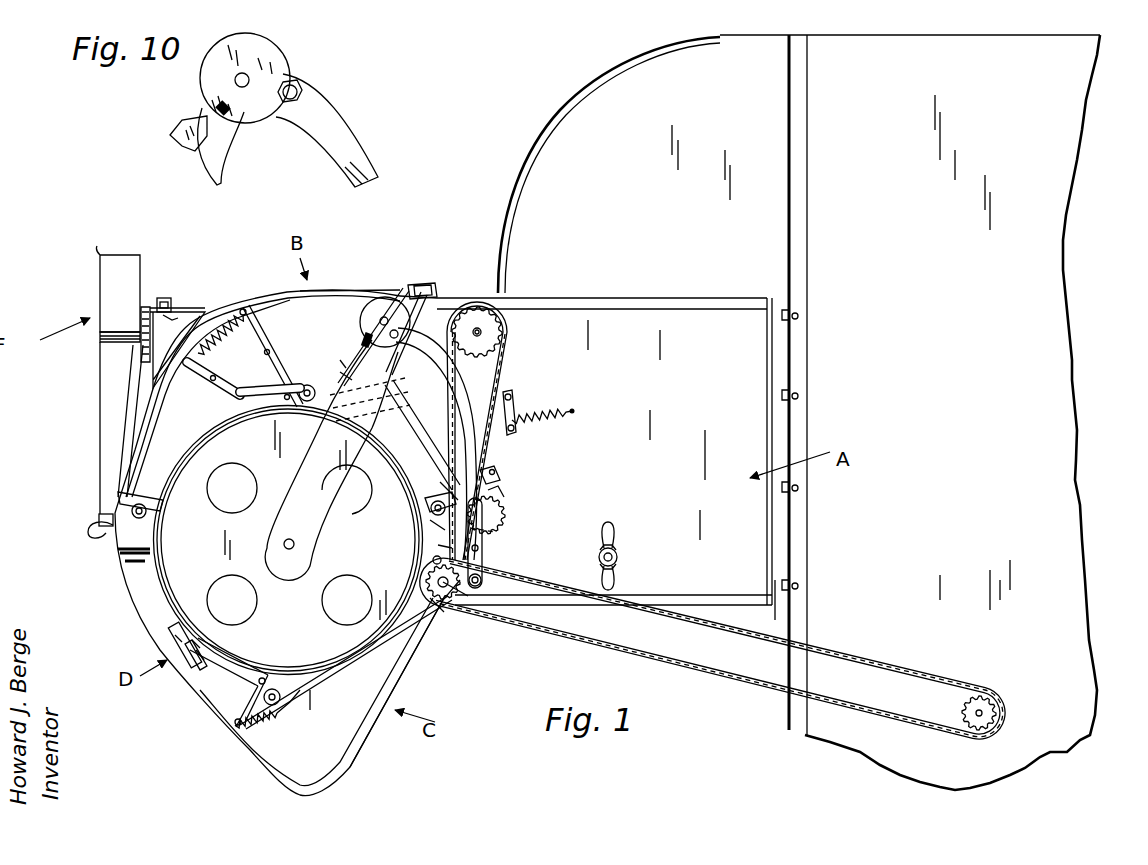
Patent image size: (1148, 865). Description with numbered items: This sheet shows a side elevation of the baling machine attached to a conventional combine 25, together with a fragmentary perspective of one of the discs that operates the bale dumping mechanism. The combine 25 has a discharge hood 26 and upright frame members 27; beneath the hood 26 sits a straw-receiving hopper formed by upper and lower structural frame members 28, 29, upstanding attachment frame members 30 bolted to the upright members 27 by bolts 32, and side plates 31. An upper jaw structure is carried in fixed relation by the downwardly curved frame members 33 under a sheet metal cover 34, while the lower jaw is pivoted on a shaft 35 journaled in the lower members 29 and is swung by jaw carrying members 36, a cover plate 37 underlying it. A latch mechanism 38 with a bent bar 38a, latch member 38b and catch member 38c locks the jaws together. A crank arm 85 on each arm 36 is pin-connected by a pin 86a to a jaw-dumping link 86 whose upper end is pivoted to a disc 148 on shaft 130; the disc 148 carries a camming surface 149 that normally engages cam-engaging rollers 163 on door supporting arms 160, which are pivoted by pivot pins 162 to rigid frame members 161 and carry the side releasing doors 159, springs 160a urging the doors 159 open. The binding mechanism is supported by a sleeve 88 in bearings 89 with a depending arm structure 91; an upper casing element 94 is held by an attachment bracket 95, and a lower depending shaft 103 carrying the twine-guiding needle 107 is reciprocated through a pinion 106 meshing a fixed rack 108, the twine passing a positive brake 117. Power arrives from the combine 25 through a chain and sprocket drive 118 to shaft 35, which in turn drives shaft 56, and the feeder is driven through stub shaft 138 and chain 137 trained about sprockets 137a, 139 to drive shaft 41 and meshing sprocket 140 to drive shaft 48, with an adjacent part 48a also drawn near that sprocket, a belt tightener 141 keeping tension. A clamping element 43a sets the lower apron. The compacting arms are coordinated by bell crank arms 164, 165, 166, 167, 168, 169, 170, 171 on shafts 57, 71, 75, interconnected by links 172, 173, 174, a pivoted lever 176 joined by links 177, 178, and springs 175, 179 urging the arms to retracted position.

In FIG. 1, the combine 25 is at (1028, 240).
In FIG. 1, the discharge hood 26 is at (600, 103).
In FIG. 1, the upright frame members 27 is at (792, 168).
In FIG. 1, the upper structural frame member 28 is at (588, 299).
In FIG. 1, the lower structural frame member 29 is at (645, 602).
In FIG. 1, the attachment frame members 30 is at (780, 445).
In FIG. 1, the side plates 31 is at (662, 318).
In FIG. 1, the bolts 32 is at (838, 541).
In FIG. 1, the downwardly curved frame members 33 is at (330, 292).
In FIG. 1, the sheet metal cover 34 is at (282, 296).
In FIG. 1, the shaft 35 is at (438, 576).
In FIG. 1, the jaw carrying members 36 is at (425, 655).
In FIG. 1, the cover plate 37 is at (350, 763).
In FIG. 1, the latch mechanism 38 is at (180, 665).
In FIG. 1, the bent bar 38a is at (203, 656).
In FIG. 1, the latch member 38b is at (177, 638).
In FIG. 1, the catch member 38c is at (198, 642).
In FIG. 1, the shaft 41 is at (496, 530).
In FIG. 1, the clamping element 43a is at (622, 556).
In FIG. 1, the shaft 48 is at (498, 497).
In FIG. 1, the ratchet plate 48a is at (495, 480).
In FIG. 1, the shaft 56 is at (427, 510).
In FIG. 1, the shaft 57 is at (150, 519).
In FIG. 1, the shaft 71 is at (309, 388).
In FIG. 1, the shaft 75 is at (281, 690).
In FIG. 1, the crank arm 85 is at (478, 600).
In FIG. 10, the jaw-dumping link 86 is at (343, 143).
In FIG. 1, the jaw-dumping link 86 is at (465, 400).
In FIG. 1, the pin 86a is at (488, 578).
In FIG. 1, the sleeve 88 is at (182, 302).
In FIG. 1, the bearings 89 is at (166, 298).
In FIG. 1, the depending arm structure 91 is at (112, 428).
In FIG. 1, the upper casing element 94 is at (112, 285).
In FIG. 1, the attachment bracket 95 is at (175, 320).
In FIG. 1, the lower depending shaft 103 is at (100, 520).
In FIG. 1, the pinion 106 is at (138, 362).
In FIG. 1, the twine-guiding needle 107 is at (92, 533).
In FIG. 1, the fixed rack 108 is at (128, 345).
In FIG. 1, the positive brake 117 is at (426, 284).
In FIG. 1, the chain and sprocket drive 118 is at (758, 703).
In FIG. 10, the shaft 130 is at (237, 79).
In FIG. 1, the shaft 130 is at (378, 321).
In FIG. 1, the chain 137 is at (505, 363).
In FIG. 1, the sprocket 137a is at (497, 335).
In FIG. 1, the stub shaft 138 is at (477, 332).
In FIG. 1, the sprocket 139 is at (488, 553).
In FIG. 1, the sprocket 140 is at (503, 515).
In FIG. 1, the belt tightener 141 is at (514, 402).
In FIG. 10, the discs 148 is at (270, 48).
In FIG. 1, the discs 148 is at (395, 300).
In FIG. 10, the camming surface 149 is at (207, 93).
In FIG. 1, the side releasing and dumping doors 159 is at (183, 578).
In FIG. 10, the door supporting arms 160 is at (214, 148).
In FIG. 1, the door supporting arms 160 is at (322, 460).
In FIG. 1, the springs 160a is at (393, 404).
In FIG. 1, the rigid frame members 161 is at (345, 352).
In FIG. 1, the pivot pins 162 is at (362, 379).
In FIG. 10, the cam-engaging rollers 163 is at (200, 133).
In FIG. 1, the cam-engaging rollers 163 is at (363, 338).
In FIG. 1, the bell crank arm 164 is at (447, 487).
In FIG. 1, the bell crank arm 165 is at (432, 523).
In FIG. 1, the bell crank arm 166 is at (287, 392).
In FIG. 1, the bell crank arm 167 is at (334, 358).
In FIG. 1, the bell crank arm 168 is at (130, 506).
In FIG. 1, the bell crank 169 is at (433, 560).
In FIG. 1, the bell crank 170 is at (440, 620).
In FIG. 1, the bell crank 171 is at (280, 712).
In FIG. 1, the link 172 is at (392, 448).
In FIG. 1, the link 173 is at (445, 545).
In FIG. 1, the link 174 is at (323, 677).
In FIG. 1, the spring 175 is at (262, 722).
In FIG. 1, the pivoted lever 176 is at (222, 391).
In FIG. 1, the link 177 is at (261, 387).
In FIG. 1, the link 178 is at (167, 407).
In FIG. 1, the spring 179 is at (216, 345).